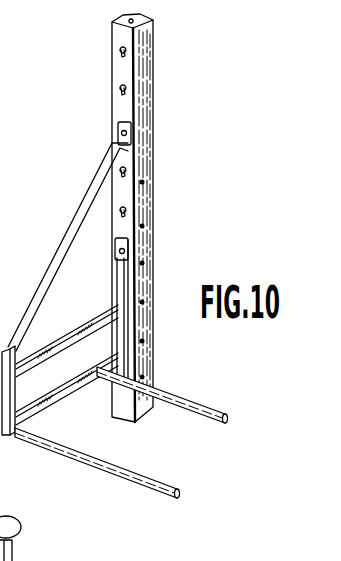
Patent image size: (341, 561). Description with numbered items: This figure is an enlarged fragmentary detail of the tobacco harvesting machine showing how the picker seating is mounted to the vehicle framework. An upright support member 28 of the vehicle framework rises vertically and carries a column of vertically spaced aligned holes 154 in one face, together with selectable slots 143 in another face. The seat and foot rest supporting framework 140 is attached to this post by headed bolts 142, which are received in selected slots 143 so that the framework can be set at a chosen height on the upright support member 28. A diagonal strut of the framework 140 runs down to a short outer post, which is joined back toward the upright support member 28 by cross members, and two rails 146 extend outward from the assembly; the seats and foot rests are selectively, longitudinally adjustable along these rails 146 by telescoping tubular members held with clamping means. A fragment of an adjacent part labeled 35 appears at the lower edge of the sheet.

The upright support member 28 is at (154, 90).
The slot 143 is at (118, 55).
The headed bolt 142 is at (117, 133).
The vertically spaced aligned hole 154 is at (146, 226).
The seat and foot rest supporting framework 140 is at (50, 268).
The rail 146 is at (196, 404).
The roller 35 is at (7, 516).